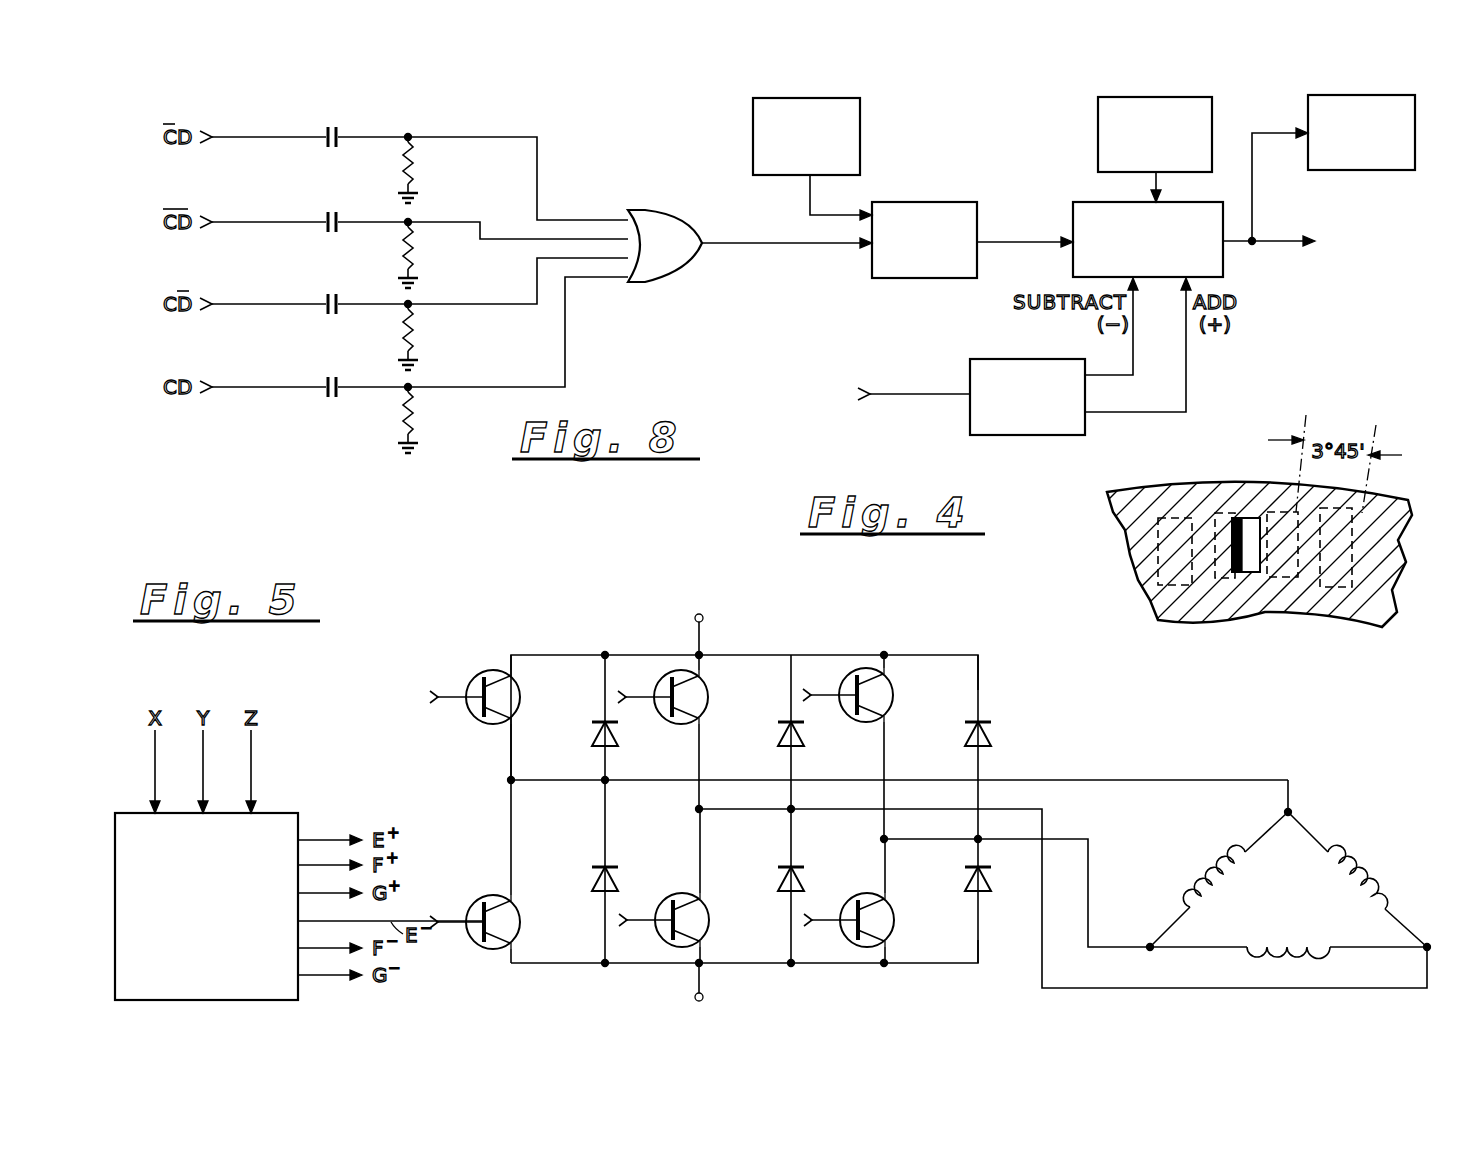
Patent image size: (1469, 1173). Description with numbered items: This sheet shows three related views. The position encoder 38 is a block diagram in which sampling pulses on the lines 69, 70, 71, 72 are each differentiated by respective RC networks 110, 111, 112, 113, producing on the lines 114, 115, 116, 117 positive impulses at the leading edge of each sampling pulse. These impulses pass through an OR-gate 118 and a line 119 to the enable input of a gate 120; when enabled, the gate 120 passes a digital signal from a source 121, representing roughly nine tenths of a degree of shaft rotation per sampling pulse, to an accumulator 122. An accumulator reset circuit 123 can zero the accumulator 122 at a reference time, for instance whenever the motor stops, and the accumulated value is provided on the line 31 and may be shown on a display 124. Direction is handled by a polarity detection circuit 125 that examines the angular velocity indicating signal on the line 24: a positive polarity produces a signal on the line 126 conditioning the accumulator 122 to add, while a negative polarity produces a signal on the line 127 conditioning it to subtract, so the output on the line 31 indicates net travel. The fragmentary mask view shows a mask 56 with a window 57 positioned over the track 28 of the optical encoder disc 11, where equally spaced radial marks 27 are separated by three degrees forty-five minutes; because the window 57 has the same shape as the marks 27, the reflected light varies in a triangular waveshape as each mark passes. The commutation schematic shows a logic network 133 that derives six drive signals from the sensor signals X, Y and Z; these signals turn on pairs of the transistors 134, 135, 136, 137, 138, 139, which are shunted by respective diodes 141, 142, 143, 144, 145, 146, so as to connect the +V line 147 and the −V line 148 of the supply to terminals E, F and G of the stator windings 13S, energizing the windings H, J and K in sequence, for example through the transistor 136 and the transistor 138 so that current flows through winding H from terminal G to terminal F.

In FIG. 8, the position encoder 38 is at (480, 112).
In FIG. 8, the sampling pulse line 69 is at (281, 137).
In FIG. 8, the sampling pulse line 70 is at (275, 222).
In FIG. 8, the sampling pulse line 71 is at (273, 304).
In FIG. 8, the sampling pulse line 72 is at (275, 387).
In FIG. 8, the RC network 110 is at (360, 130).
In FIG. 8, the RC network 111 is at (361, 212).
In FIG. 8, the RC network 112 is at (361, 295).
In FIG. 8, the RC network 113 is at (360, 377).
In FIG. 8, the impulse line 114 is at (540, 149).
In FIG. 8, the impulse line 115 is at (500, 232).
In FIG. 8, the impulse line 116 is at (499, 304).
In FIG. 8, the impulse line 117 is at (513, 387).
In FIG. 8, the OR-gate 118 is at (665, 220).
In FIG. 8, the line 119 is at (757, 246).
In FIG. 8, the gate 120 is at (916, 280).
In FIG. 8, the source 121 is at (860, 136).
In FIG. 8, the accumulator 122 is at (1079, 209).
In FIG. 8, the accumulator reset circuit 123 is at (1093, 106).
In FIG. 8, the display 124 is at (1383, 171).
In FIG. 8, the polarity detection circuit 125 is at (1005, 359).
In FIG. 8, the add line 126 is at (1186, 376).
In FIG. 8, the subtract line 127 is at (1130, 349).
In FIG. 8, the angular velocity indicating signal line 24 is at (895, 393).
In FIG. 8, the position-indicating signal line 31 is at (1281, 244).
In FIG. 4, the window 57 is at (1260, 520).
In FIG. 4, the radial marks 27 is at (1400, 527).
In FIG. 4, the mask 56 is at (1400, 544).
In FIG. 4, the track 28 is at (1372, 568).
In FIG. 4, the optical encoder disc 11 is at (1365, 616).
In FIG. 5, the logic network 133 is at (206, 906).
In FIG. 5, the transistor 134 is at (480, 670).
In FIG. 5, the transistor 135 is at (665, 670).
In FIG. 5, the transistor 136 is at (860, 662).
In FIG. 5, the transistor 137 is at (482, 895).
In FIG. 5, the transistor 138 is at (672, 891).
In FIG. 5, the transistor 139 is at (857, 891).
In FIG. 5, the diode 141 is at (591, 739).
In FIG. 5, the diode 142 is at (595, 880).
In FIG. 5, the diode 143 is at (780, 741).
In FIG. 5, the diode 144 is at (780, 876).
In FIG. 5, the diode 145 is at (965, 741).
In FIG. 5, the diode 146 is at (966, 882).
In FIG. 5, the +V line 147 is at (695, 618).
In FIG. 5, the −V line 148 is at (699, 982).
In FIG. 5, the stator windings 13S is at (1305, 904).